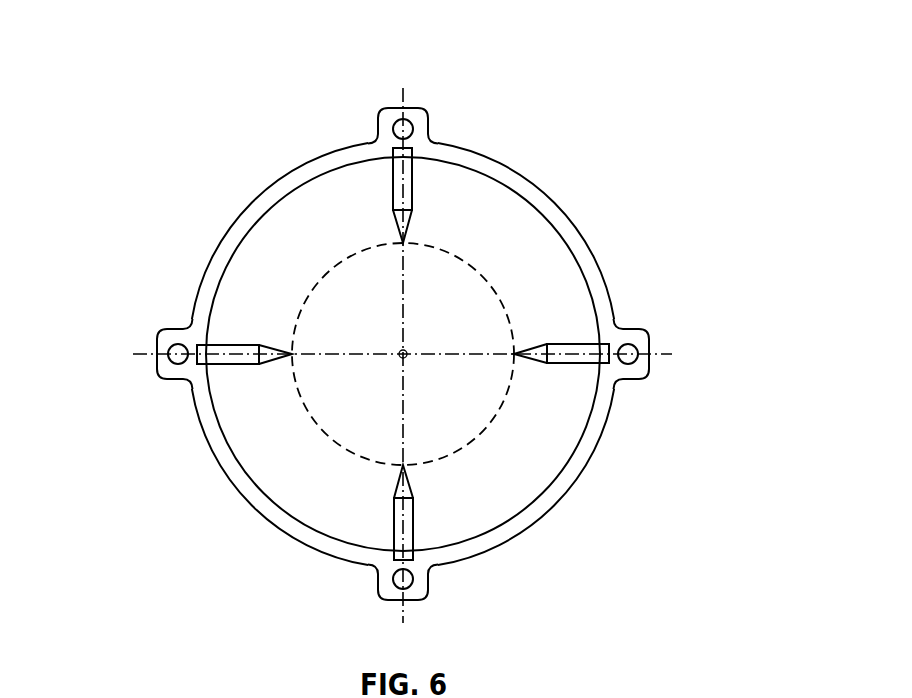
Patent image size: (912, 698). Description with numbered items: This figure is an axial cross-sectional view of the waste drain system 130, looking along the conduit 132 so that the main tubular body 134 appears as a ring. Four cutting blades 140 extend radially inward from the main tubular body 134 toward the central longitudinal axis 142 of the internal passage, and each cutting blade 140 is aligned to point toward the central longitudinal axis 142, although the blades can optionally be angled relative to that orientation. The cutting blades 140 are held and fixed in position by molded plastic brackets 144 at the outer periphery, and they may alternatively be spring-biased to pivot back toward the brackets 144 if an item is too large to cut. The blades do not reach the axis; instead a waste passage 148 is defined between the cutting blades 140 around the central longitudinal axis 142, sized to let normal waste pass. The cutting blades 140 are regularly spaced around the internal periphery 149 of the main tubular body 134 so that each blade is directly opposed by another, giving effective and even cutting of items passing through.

The waste drain system 130 is at (146, 40).
The conduit 132 is at (586, 46).
The main tubular body 134 is at (513, 168).
The cutting blades 140 is at (412, 187).
The central longitudinal axis 142 is at (400, 351).
The brackets 144 is at (420, 112).
The waste passage 148 is at (490, 285).
The internal periphery 149 is at (236, 452).